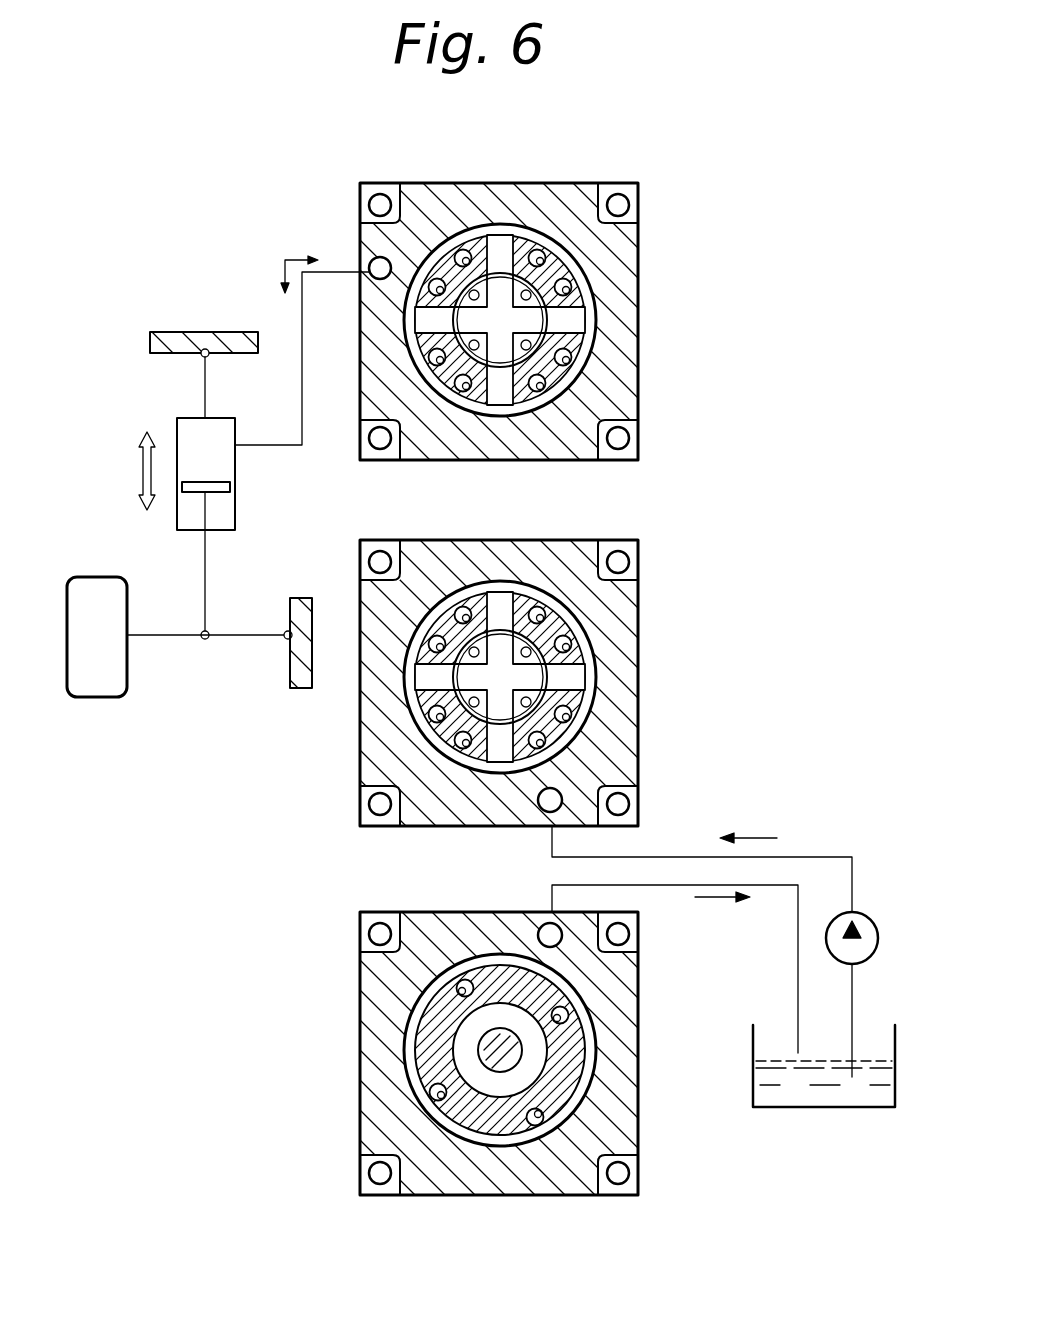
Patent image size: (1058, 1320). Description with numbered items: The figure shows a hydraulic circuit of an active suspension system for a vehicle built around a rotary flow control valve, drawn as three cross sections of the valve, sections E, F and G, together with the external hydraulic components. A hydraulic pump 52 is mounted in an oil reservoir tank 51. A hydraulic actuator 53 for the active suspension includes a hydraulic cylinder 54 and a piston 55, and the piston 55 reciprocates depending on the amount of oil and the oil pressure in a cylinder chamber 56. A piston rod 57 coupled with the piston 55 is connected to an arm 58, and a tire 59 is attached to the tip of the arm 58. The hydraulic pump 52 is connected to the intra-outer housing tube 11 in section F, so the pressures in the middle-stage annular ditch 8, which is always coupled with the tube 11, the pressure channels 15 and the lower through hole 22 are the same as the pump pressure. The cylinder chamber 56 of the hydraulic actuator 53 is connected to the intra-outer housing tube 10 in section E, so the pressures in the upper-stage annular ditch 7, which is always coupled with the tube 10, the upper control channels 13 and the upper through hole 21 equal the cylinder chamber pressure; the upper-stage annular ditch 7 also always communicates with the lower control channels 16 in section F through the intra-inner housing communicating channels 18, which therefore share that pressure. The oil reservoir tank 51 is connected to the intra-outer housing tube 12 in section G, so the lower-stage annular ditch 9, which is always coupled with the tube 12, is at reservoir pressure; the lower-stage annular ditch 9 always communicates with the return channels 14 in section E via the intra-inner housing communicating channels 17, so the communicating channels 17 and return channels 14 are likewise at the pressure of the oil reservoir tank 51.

The upper-stage annular ditch 7 is at (640, 330).
The middle-stage annular ditch 8 is at (640, 692).
The lower-stage annular ditch 9 is at (590, 1060).
The intra-outer housing tube 10 is at (372, 260).
The intra-outer housing tube 11 is at (543, 810).
The intra-outer housing tube 12 is at (543, 928).
The upper control channels 13 is at (500, 235).
The return channels 14 is at (458, 282).
The pressure channels 15 is at (500, 592).
The lower control channels 16 is at (455, 636).
The intra-inner housing communicating channels 17 is at (468, 238).
The intra-inner housing communicating channels 18 is at (454, 250).
The upper through hole 21 is at (482, 306).
The lower through hole 22 is at (482, 663).
The oil reservoir tank 51 is at (815, 1108).
The hydraulic pump 52 is at (852, 911).
The hydraulic actuator 53 is at (177, 430).
The hydraulic cylinder 54 is at (235, 520).
The piston 55 is at (230, 487).
The cylinder chamber 56 is at (235, 425).
The piston rod 57 is at (206, 592).
The arm 58 is at (160, 637).
The tire 59 is at (95, 698).